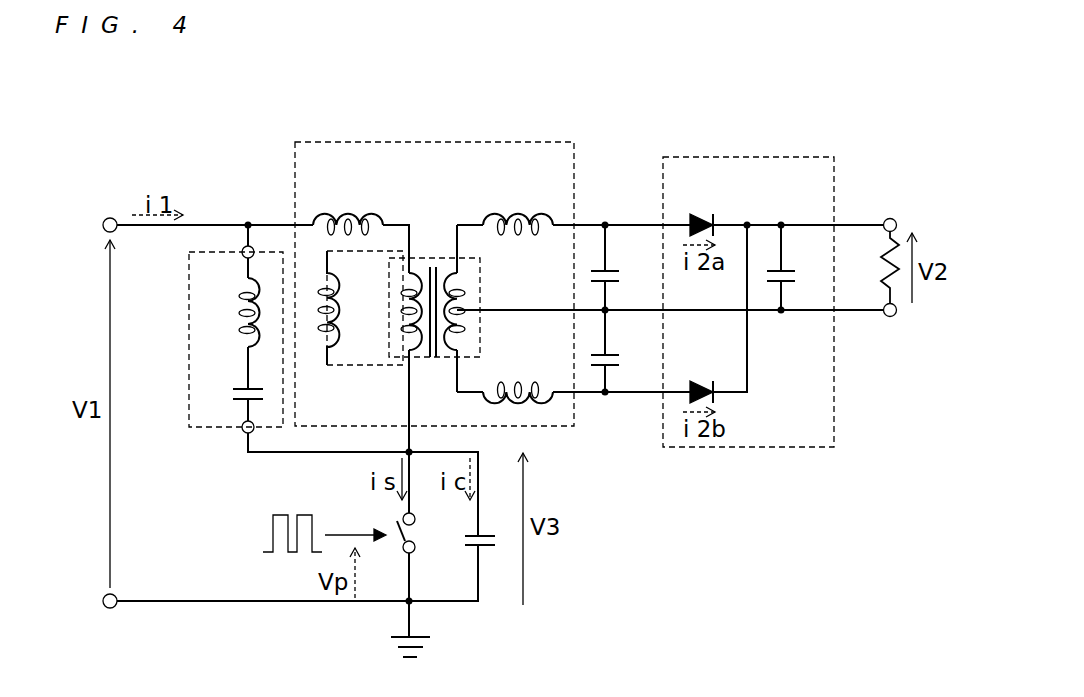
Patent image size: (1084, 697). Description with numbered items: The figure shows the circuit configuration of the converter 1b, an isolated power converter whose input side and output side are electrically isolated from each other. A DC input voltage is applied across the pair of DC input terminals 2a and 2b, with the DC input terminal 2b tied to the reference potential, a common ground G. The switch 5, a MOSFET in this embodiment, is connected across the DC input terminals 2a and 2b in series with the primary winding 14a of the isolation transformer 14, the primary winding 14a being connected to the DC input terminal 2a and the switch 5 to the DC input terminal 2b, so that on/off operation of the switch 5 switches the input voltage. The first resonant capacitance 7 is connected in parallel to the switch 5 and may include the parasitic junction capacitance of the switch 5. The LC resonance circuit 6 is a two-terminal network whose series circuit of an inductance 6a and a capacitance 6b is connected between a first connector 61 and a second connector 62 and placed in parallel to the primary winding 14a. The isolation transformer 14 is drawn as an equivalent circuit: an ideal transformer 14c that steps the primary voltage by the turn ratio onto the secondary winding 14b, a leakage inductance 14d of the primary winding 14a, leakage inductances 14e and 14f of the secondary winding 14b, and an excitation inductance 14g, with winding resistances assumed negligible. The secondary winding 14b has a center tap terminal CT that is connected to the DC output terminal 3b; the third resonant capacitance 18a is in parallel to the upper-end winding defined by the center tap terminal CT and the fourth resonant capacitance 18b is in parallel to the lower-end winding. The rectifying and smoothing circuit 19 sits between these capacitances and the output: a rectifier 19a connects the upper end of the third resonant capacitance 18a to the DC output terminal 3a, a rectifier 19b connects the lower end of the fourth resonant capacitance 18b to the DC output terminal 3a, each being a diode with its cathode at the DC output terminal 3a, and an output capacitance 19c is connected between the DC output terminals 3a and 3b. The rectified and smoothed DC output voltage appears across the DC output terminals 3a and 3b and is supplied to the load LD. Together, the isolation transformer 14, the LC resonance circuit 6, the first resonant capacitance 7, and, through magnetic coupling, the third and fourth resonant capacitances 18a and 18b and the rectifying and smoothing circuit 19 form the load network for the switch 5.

The converter 1b is at (375, 79).
The DC input terminal 2a is at (112, 217).
The DC input terminal 2b is at (114, 608).
The DC output terminal 3a is at (889, 218).
The DC output terminal 3b is at (888, 317).
The switch 5 is at (416, 536).
The LC resonance circuit 6 is at (187, 352).
The inductance 6a is at (234, 322).
The capacitance 6b is at (234, 392).
The first resonant capacitance 7 is at (486, 532).
The first connector 61 is at (242, 252).
The second connector 62 is at (242, 430).
The isolation transformer 14 is at (462, 139).
The primary winding 14a is at (394, 218).
The secondary winding 14b is at (465, 218).
The ideal transformer 14c is at (443, 356).
The leakage inductance 14d is at (341, 212).
The leakage inductance 14e is at (527, 212).
The leakage inductance 14f is at (520, 388).
The excitation inductance 14g is at (323, 336).
The third resonant capacitance 18a is at (616, 270).
The fourth resonant capacitance 18b is at (616, 354).
The rectifying and smoothing circuit 19 is at (751, 155).
The rectifier 19a is at (702, 213).
The rectifier 19b is at (702, 380).
The output capacitance 19c is at (791, 270).
The center tap terminal CT is at (503, 309).
The load LD is at (882, 287).
The common ground G is at (416, 636).